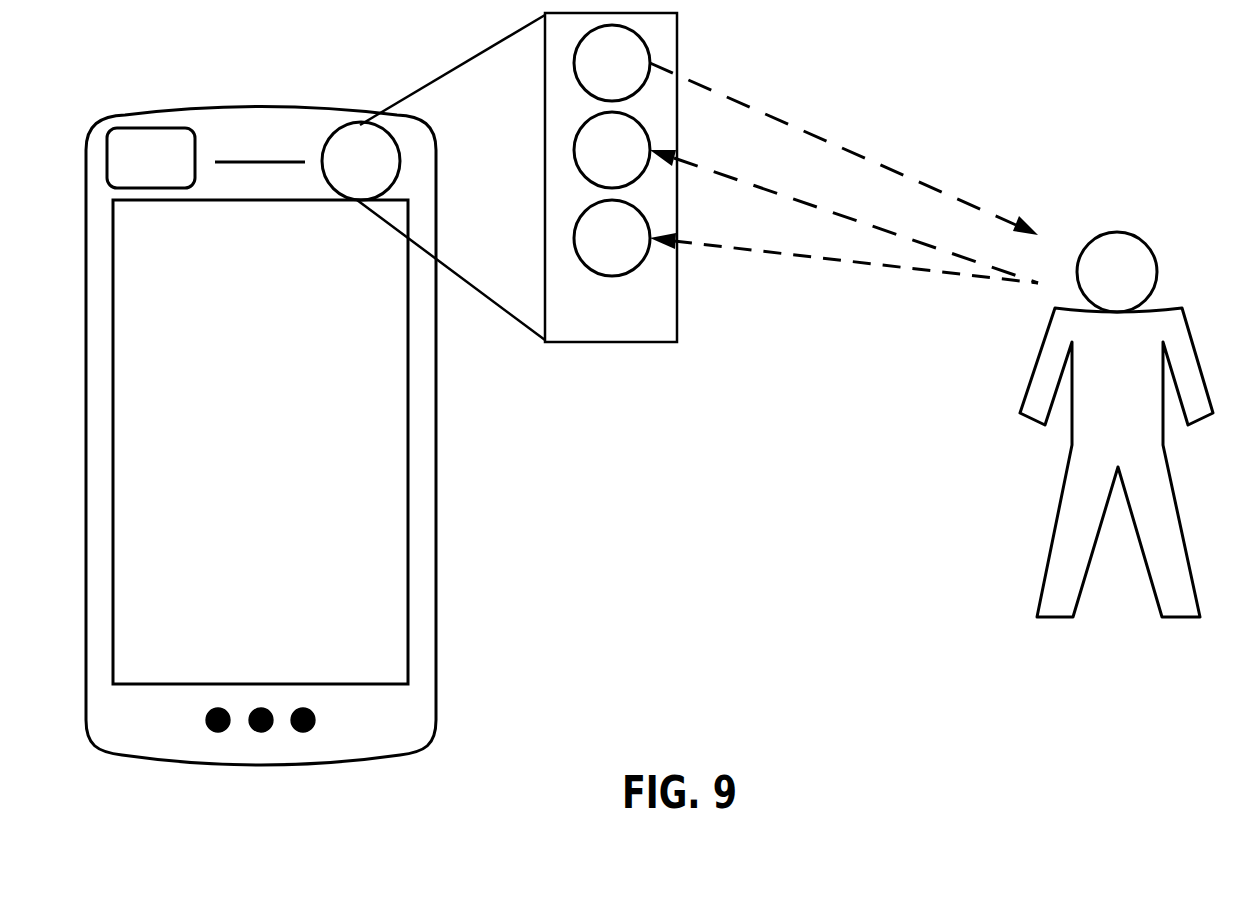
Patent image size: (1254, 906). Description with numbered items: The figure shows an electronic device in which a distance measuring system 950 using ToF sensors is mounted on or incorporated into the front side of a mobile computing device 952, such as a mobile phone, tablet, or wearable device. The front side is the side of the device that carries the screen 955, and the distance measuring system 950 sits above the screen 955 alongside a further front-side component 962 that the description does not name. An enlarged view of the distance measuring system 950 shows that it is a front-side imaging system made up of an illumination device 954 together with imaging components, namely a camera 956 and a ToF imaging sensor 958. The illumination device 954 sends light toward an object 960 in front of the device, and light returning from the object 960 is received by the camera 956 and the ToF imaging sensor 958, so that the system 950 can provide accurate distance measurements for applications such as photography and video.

The distance measuring system 950 is at (337, 174).
The mobile computing device 952 is at (163, 732).
The illumination device 954 is at (588, 76).
The screen 955 is at (237, 447).
The camera 956 is at (588, 163).
The ToF imaging sensor 958 is at (588, 251).
The user 960 is at (1093, 285).
The speaker 962 is at (206, 158).